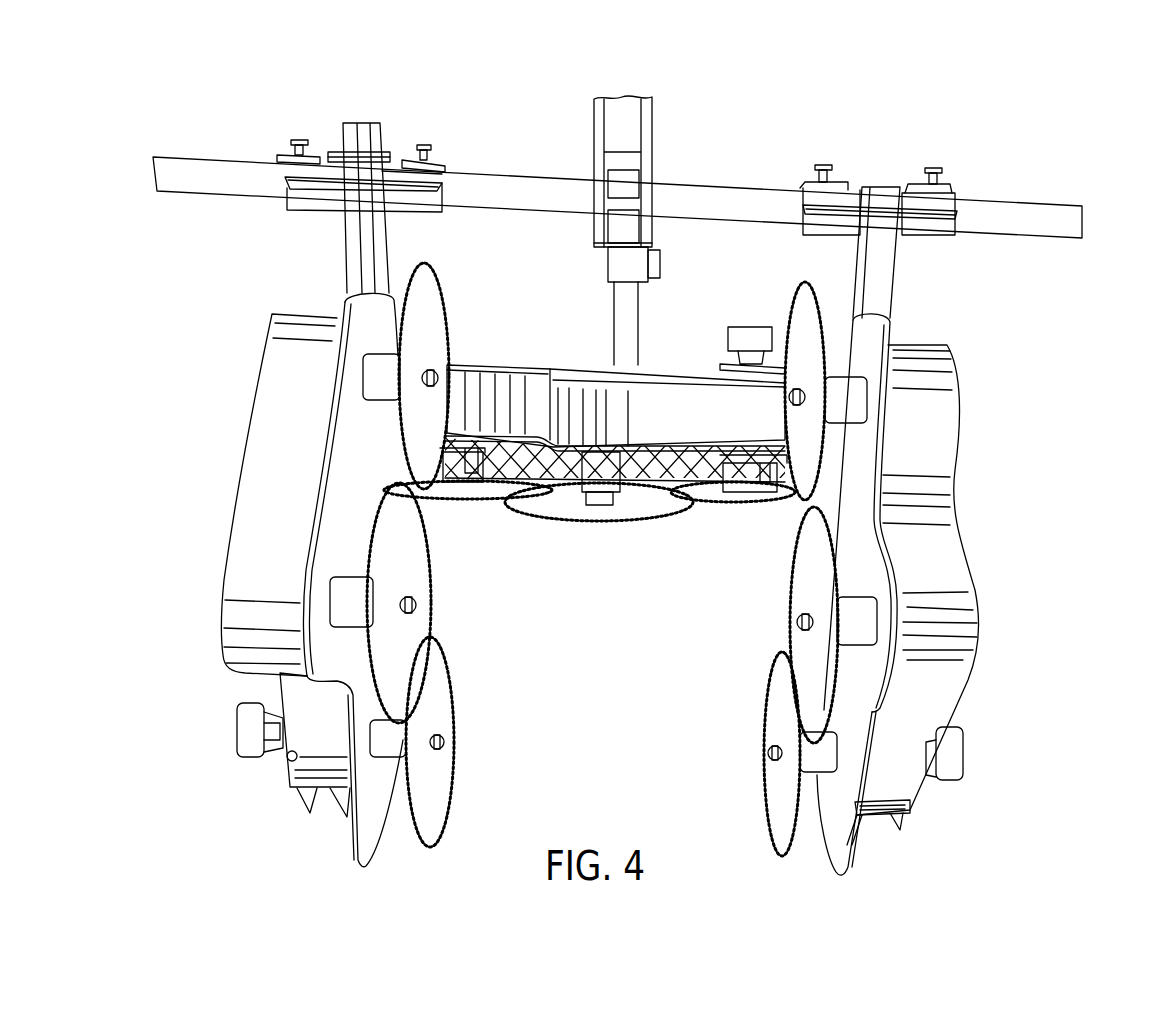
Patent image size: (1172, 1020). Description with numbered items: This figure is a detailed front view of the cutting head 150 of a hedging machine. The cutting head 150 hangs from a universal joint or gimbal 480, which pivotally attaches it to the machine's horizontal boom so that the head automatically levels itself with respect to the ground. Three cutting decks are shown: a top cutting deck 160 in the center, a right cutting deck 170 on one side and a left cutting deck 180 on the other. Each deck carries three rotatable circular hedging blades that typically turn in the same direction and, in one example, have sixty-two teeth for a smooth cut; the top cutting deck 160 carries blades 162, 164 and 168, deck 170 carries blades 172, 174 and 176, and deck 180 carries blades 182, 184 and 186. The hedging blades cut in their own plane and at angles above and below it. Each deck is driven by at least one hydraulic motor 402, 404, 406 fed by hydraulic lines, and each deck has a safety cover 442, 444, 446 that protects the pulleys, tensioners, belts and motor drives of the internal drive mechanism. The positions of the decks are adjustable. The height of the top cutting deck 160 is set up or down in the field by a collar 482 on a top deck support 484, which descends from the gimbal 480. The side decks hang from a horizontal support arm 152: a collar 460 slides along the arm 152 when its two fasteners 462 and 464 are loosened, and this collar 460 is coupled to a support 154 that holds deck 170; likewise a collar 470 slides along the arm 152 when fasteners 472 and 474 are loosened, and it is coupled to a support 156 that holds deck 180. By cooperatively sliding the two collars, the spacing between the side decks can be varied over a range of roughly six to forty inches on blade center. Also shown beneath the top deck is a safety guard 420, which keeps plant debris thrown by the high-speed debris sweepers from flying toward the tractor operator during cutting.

The cutting head 150 is at (1106, 130).
The horizontal support arm 152 is at (1032, 208).
The support 154 is at (894, 276).
The support 156 is at (381, 240).
The top cutting deck 160 is at (655, 372).
The rotating blade 162 is at (462, 498).
The rotating blade 164 is at (604, 524).
The rotating blade 168 is at (720, 518).
The right cutting deck 170 is at (953, 527).
The rotating blade 172 is at (800, 302).
The rotating blade 174 is at (792, 616).
The rotating blade 176 is at (768, 744).
The left cutting deck 180 is at (252, 413).
The rotating blade 182 is at (440, 352).
The rotating blade 184 is at (430, 576).
The rotating blade 186 is at (450, 700).
The hydraulic motor 402 is at (740, 330).
The hydraulic motor 404 is at (965, 750).
The hydraulic motor 406 is at (238, 730).
The safety guard 420 is at (527, 492).
The safety cover 442 is at (527, 368).
The safety cover 444 is at (976, 568).
The safety cover 446 is at (237, 481).
The collar 460 is at (850, 192).
The fastener 462 is at (822, 166).
The fastener 464 is at (933, 170).
The collar 470 is at (380, 152).
The fastener 472 is at (296, 140).
The fastener 474 is at (427, 152).
The universal joint or gimbal 480 is at (653, 112).
The collar 482 is at (655, 262).
The top deck support 484 is at (613, 324).